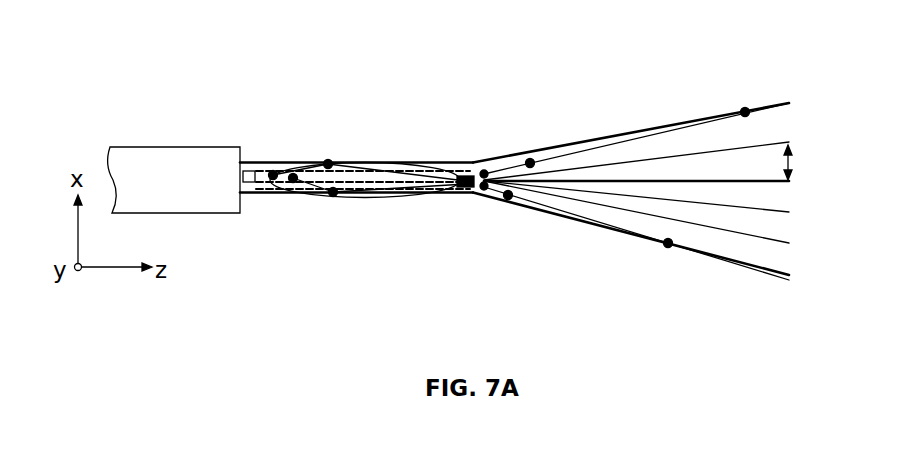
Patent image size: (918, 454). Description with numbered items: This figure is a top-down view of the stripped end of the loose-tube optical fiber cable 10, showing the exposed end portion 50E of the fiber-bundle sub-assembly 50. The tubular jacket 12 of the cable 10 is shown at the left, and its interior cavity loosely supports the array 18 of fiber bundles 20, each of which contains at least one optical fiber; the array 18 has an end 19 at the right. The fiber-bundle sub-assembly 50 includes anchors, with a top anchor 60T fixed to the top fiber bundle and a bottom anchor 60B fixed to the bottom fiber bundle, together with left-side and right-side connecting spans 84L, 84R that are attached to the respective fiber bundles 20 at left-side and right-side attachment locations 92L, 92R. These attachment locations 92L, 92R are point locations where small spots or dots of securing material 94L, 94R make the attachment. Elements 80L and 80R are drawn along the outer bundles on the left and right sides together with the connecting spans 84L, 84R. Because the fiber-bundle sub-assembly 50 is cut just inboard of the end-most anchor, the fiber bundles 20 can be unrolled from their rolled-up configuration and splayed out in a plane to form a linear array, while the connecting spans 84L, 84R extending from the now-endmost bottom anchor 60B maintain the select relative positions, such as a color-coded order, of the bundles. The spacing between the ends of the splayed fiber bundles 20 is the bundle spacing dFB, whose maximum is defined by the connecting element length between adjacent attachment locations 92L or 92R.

The loose-tube optical fiber cable 10 is at (195, 88).
The tubular jacket 12 is at (152, 148).
The array 18 is at (497, 142).
The end 19 is at (827, 117).
The fiber bundles 20 is at (412, 179).
The fiber-bundle sub-assembly 50 is at (393, 272).
The exposed end portion 50E is at (378, 205).
The bottom anchor 60B is at (250, 171).
The top anchor 60T is at (466, 190).
The left-side attachment location 92L is at (288, 167).
The right-side attachment location 92R is at (329, 159).
The securing material 94L is at (333, 196).
The securing material 94R is at (326, 163).
The right outer ray 80R is at (615, 143).
The right-side connecting span 84R is at (745, 112).
The left outer ray 80L is at (537, 208).
The left-side connecting span 84L is at (668, 243).
The bundle spacing dFB is at (814, 162).